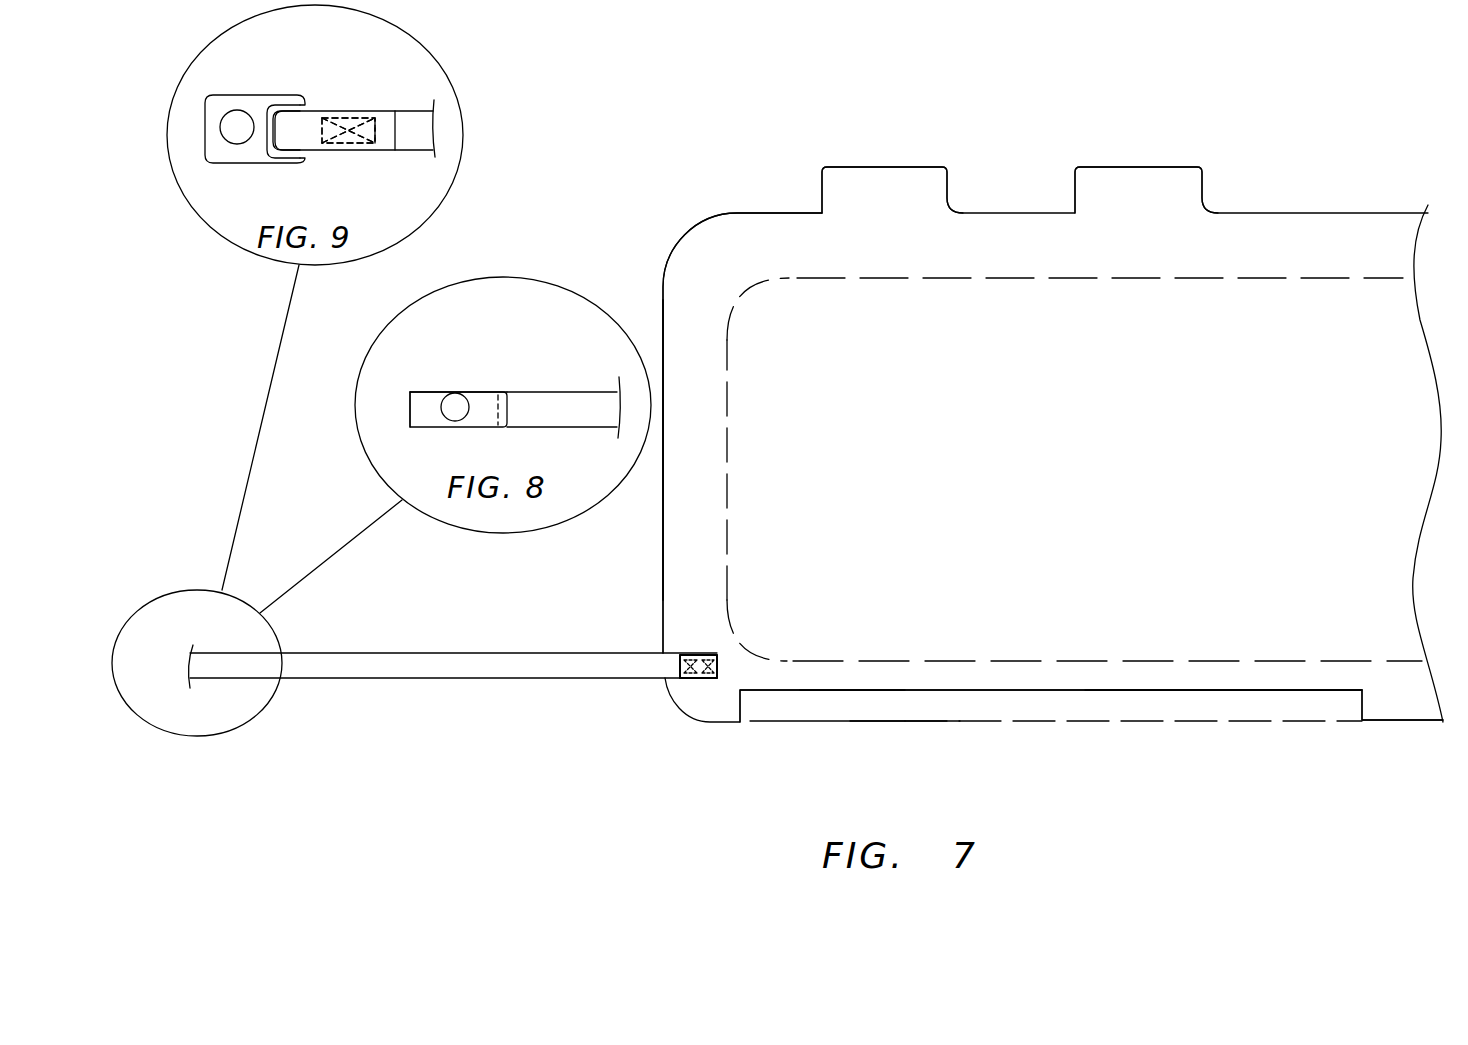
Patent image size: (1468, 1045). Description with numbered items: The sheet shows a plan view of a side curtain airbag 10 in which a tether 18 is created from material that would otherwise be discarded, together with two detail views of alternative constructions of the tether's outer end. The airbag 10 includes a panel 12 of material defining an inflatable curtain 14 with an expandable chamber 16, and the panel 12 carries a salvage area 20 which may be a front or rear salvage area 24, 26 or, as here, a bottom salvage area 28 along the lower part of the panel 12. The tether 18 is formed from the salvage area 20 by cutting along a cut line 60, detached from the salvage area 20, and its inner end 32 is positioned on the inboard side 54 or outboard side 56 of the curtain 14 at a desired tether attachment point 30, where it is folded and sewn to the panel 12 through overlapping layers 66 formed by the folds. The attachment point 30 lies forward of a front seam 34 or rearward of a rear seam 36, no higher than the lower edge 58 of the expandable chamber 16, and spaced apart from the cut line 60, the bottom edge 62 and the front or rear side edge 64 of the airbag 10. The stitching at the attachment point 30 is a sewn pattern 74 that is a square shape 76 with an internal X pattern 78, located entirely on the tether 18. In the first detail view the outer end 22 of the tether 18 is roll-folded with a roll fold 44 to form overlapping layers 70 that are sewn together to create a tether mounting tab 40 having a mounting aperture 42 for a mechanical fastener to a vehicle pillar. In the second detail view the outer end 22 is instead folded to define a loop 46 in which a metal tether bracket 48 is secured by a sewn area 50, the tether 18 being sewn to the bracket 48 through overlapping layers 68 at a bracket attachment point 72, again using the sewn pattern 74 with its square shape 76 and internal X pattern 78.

In FIG. 7, the side curtain airbag 10 is at (1218, 120).
In FIG. 7, the panel 12 is at (1310, 303).
In FIG. 7, the inflatable curtain 14 is at (1254, 600).
In FIG. 7, the expandable chamber 16 is at (1170, 633).
In FIG. 7, the tether 18 is at (513, 662).
In FIG. 8, the tether 18 is at (573, 400).
In FIG. 9, the tether 18 is at (407, 117).
In FIG. 7, the salvage area 20 is at (1098, 705).
In FIG. 8, the outer end 22 is at (410, 407).
In FIG. 9, the outer end 22 is at (270, 137).
In FIG. 7, the front salvage area 24 is at (708, 460).
In FIG. 7, the rear salvage area 26 is at (708, 460).
In FIG. 7, the bottom salvage area 28 is at (1040, 788).
In FIG. 7, the tether attachment point 30 is at (677, 634).
In FIG. 7, the inner end 32 is at (717, 667).
In FIG. 7, the front seam 34 is at (727, 360).
In FIG. 7, the rear seam 36 is at (783, 352).
In FIG. 8, the tether mounting tab 40 is at (452, 375).
In FIG. 8, the mounting aperture 42 is at (461, 394).
In FIG. 8, the roll fold 44 is at (517, 396).
In FIG. 9, the loop 46 is at (316, 157).
In FIG. 9, the metal tether bracket 48 is at (256, 49).
In FIG. 9, the sewn area 50 is at (354, 95).
In FIG. 7, the inboard side 54 is at (920, 310).
In FIG. 7, the outboard side 56 is at (920, 310).
In FIG. 7, the lower edge 58 is at (1300, 663).
In FIG. 7, the cut line 60 is at (857, 690).
In FIG. 7, the bottom edge 62 is at (900, 722).
In FIG. 7, the side edge 64 is at (663, 540).
In FIG. 7, the overlapping layers 66 is at (702, 634).
In FIG. 9, the overlapping layers 68 is at (380, 150).
In FIG. 8, the overlapping layers 70 is at (475, 436).
In FIG. 9, the attachment point 72 is at (320, 97).
In FIG. 7, the sewn pattern 74 is at (702, 678).
In FIG. 7, the square shape 76 is at (682, 667).
In FIG. 9, the square shape 76 is at (377, 134).
In FIG. 7, the internal X pattern 78 is at (692, 678).
In FIG. 9, the internal X pattern 78 is at (356, 140).